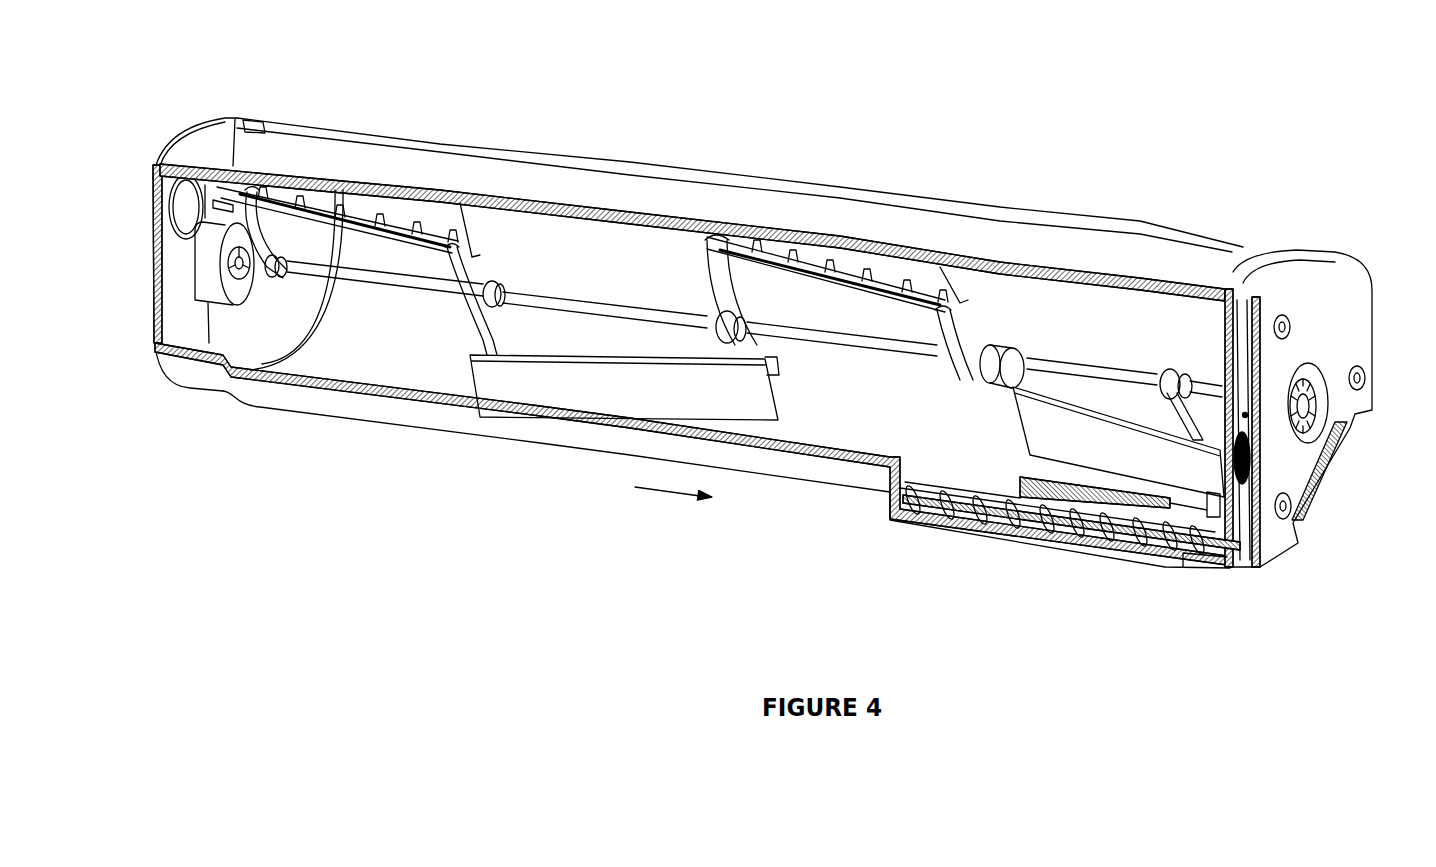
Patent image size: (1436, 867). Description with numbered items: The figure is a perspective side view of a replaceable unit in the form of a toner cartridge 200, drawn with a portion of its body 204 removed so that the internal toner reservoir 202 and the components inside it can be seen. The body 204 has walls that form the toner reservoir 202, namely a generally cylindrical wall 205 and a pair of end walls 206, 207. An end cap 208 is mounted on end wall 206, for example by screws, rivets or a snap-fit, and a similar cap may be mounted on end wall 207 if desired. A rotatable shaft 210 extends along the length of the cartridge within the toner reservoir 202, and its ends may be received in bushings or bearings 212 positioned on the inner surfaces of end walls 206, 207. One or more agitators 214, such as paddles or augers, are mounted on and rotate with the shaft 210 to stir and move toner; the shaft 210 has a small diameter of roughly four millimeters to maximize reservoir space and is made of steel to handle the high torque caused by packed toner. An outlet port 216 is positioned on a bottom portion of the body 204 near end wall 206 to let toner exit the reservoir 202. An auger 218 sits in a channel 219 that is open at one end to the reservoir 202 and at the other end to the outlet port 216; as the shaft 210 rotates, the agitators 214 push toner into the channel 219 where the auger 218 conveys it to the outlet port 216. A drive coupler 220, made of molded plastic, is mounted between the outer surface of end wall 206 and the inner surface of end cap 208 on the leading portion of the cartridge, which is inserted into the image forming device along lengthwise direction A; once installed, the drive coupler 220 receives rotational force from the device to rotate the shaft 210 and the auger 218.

The toner cartridge 200 is at (756, 348).
The toner reservoir 202 is at (383, 362).
The body 204 is at (457, 142).
The cylindrical wall 205 is at (793, 207).
The end wall 206 is at (1225, 322).
The end wall 207 is at (187, 132).
The end cap 208 is at (1353, 277).
The rotatable shaft 210 is at (887, 357).
The bushings or bearings 212 is at (203, 283).
The agitators 214 is at (592, 397).
The outlet port 216 is at (1178, 581).
The auger 218 is at (1040, 517).
The channel 219 is at (958, 531).
The drive coupler 220 is at (1312, 415).